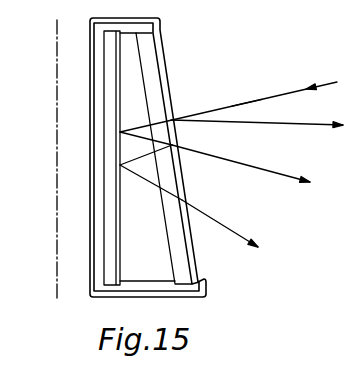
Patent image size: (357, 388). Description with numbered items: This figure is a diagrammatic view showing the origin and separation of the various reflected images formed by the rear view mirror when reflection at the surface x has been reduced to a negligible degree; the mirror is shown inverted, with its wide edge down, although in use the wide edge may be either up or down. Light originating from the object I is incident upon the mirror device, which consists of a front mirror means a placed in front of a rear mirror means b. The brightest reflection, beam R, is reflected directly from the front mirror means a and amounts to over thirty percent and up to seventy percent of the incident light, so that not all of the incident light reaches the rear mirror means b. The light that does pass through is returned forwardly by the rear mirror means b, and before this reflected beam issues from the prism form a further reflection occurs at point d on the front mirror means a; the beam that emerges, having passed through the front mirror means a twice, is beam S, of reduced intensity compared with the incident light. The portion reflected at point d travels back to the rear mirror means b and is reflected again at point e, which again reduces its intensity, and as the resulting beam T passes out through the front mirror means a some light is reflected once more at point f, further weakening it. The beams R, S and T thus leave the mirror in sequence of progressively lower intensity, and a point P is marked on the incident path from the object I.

The front mirror means a is at (165, 82).
The rear mirror means b is at (120, 102).
The point d is at (175, 144).
The point e is at (120, 165).
The point f is at (183, 200).
The surface x is at (167, 232).
The point on incident ray P is at (247, 102).
The object I is at (234, 103).
The reflected beam R is at (272, 123).
The reflected beam S is at (272, 170).
The beam T is at (225, 225).